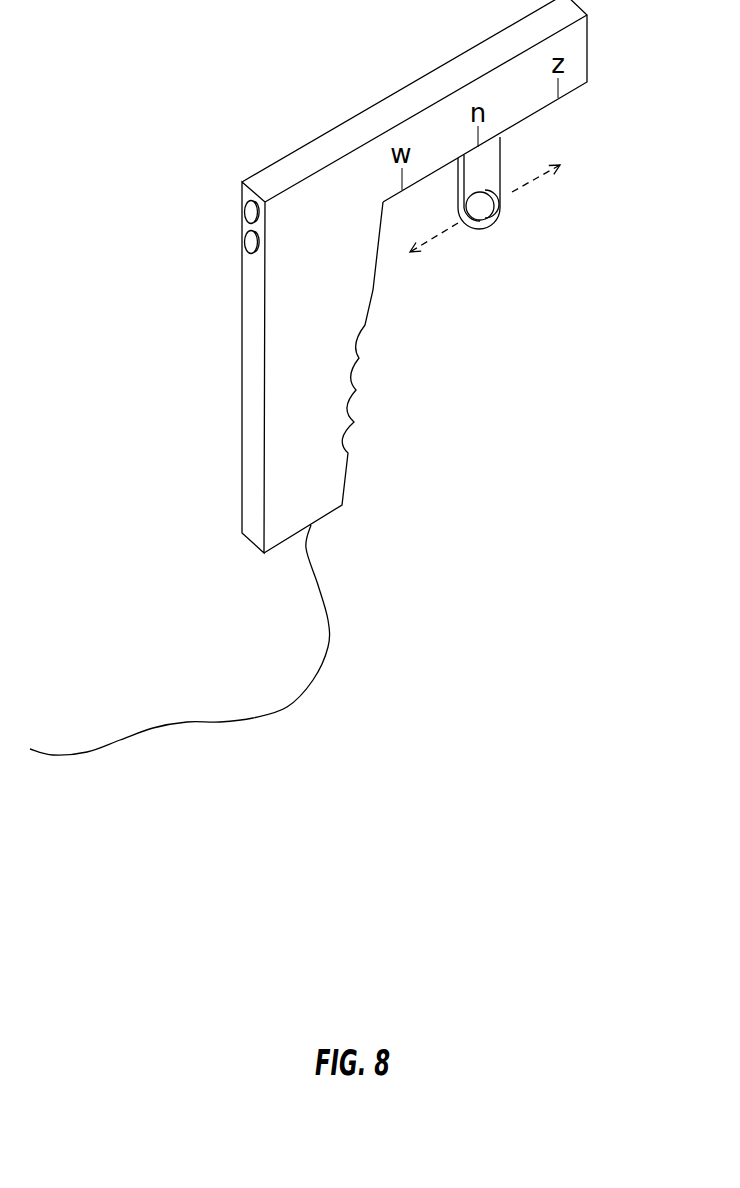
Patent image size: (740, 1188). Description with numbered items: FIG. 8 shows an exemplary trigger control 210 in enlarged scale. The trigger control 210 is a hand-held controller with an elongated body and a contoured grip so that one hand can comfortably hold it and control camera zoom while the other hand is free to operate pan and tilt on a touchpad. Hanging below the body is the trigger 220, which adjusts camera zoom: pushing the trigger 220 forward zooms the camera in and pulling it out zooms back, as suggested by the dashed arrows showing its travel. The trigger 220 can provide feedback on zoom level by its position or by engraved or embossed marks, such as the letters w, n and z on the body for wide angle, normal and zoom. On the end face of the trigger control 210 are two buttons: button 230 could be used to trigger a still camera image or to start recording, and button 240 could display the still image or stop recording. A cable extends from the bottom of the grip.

The trigger control 210 is at (372, 93).
The trigger 220 is at (497, 212).
The button 230 is at (247, 212).
The button 240 is at (245, 242).